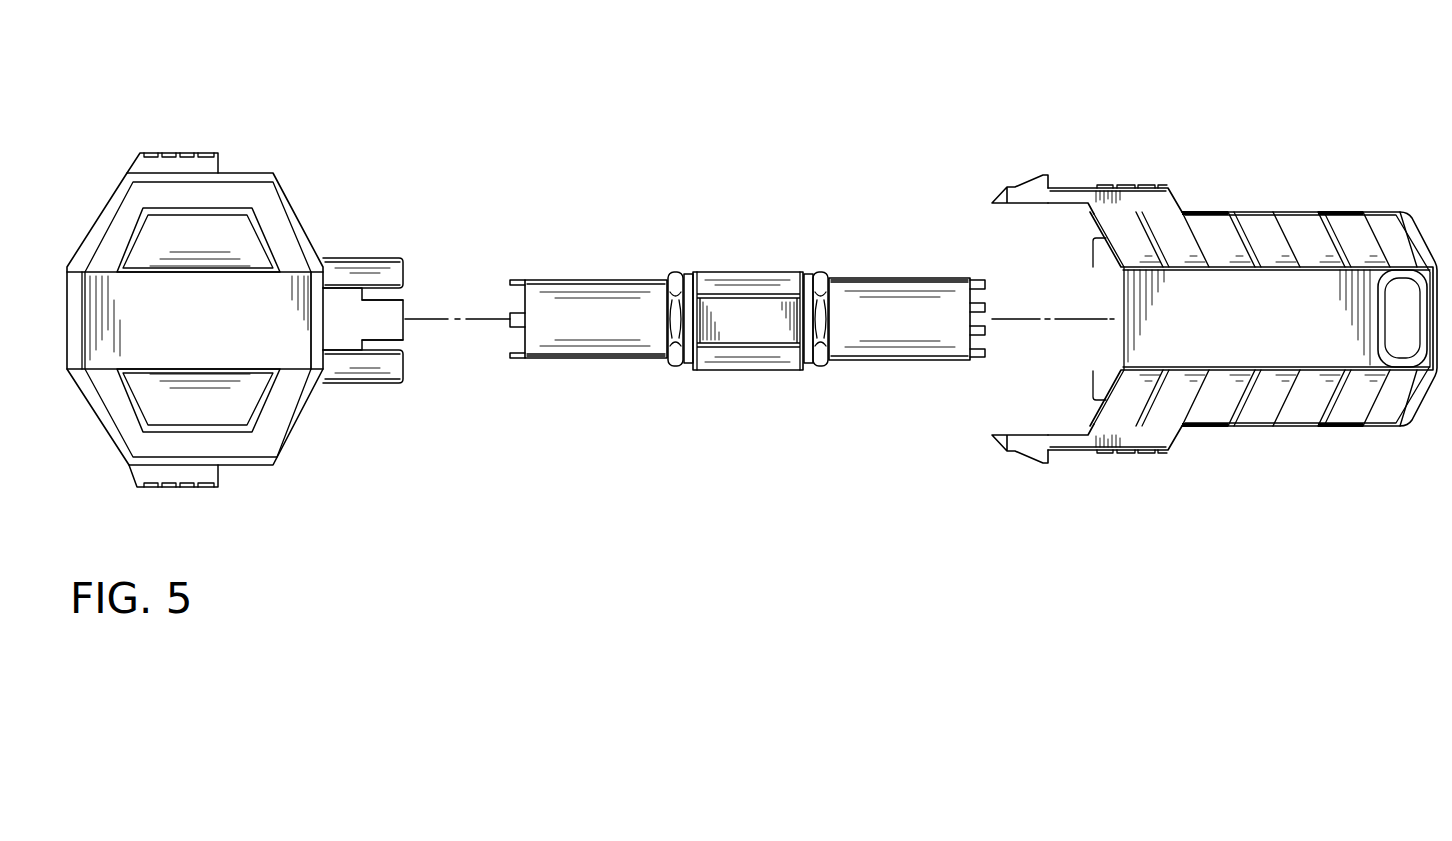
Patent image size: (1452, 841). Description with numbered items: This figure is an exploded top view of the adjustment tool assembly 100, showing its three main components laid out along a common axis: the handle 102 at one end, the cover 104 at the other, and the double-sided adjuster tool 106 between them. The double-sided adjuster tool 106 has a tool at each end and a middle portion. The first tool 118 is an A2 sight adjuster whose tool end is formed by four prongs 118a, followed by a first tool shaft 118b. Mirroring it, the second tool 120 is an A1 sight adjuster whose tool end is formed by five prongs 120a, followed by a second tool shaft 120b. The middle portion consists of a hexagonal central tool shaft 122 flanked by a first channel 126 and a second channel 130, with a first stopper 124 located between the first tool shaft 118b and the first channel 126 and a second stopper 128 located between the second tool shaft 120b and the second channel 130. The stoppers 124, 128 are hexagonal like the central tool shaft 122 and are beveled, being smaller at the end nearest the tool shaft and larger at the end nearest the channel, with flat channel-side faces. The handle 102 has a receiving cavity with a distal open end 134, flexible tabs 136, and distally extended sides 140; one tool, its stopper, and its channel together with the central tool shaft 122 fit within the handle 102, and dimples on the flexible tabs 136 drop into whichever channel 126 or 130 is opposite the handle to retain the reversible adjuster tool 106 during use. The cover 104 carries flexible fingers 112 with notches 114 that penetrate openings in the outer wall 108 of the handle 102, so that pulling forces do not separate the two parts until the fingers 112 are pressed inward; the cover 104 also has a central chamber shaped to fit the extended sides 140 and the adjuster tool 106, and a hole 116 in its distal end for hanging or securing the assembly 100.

The adjustment tool assembly 100 is at (632, 56).
The handle 102 is at (280, 158).
The cover 104 is at (1272, 188).
The double-sided adjuster tool 106 is at (768, 164).
The outer wall 108 is at (170, 163).
The flexible finger 112 is at (1075, 193).
The notch 114 is at (1040, 176).
The hole 116 is at (1388, 338).
The first tool 118 is at (594, 298).
The prongs 118a is at (516, 278).
The first tool shaft 118b is at (578, 358).
The second tool 120 is at (880, 335).
The prongs 120a is at (983, 360).
The second tool shaft 120b is at (897, 278).
The central tool shaft 122 is at (718, 363).
The first stopper 124 is at (675, 366).
The first channel 126 is at (683, 272).
The second stopper 128 is at (818, 272).
The second channel 130 is at (812, 365).
The open end 134 is at (420, 345).
The flexible tabs 136 is at (397, 313).
The extended sides 140 is at (342, 268).